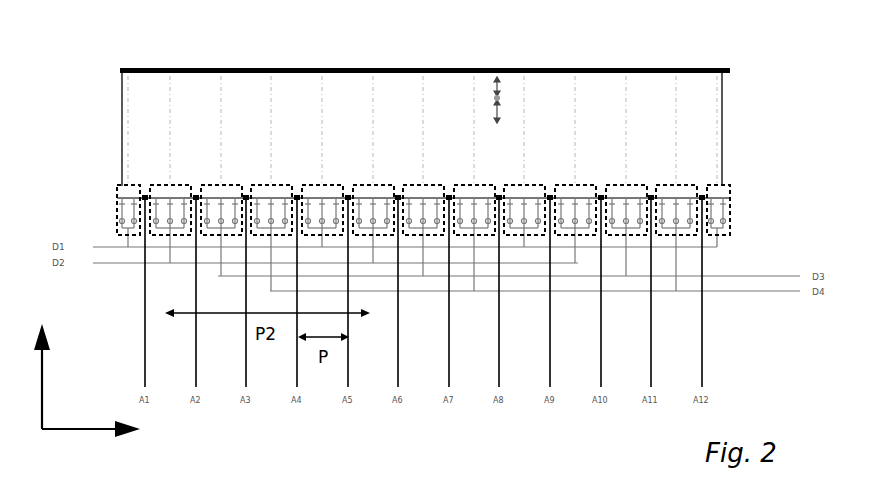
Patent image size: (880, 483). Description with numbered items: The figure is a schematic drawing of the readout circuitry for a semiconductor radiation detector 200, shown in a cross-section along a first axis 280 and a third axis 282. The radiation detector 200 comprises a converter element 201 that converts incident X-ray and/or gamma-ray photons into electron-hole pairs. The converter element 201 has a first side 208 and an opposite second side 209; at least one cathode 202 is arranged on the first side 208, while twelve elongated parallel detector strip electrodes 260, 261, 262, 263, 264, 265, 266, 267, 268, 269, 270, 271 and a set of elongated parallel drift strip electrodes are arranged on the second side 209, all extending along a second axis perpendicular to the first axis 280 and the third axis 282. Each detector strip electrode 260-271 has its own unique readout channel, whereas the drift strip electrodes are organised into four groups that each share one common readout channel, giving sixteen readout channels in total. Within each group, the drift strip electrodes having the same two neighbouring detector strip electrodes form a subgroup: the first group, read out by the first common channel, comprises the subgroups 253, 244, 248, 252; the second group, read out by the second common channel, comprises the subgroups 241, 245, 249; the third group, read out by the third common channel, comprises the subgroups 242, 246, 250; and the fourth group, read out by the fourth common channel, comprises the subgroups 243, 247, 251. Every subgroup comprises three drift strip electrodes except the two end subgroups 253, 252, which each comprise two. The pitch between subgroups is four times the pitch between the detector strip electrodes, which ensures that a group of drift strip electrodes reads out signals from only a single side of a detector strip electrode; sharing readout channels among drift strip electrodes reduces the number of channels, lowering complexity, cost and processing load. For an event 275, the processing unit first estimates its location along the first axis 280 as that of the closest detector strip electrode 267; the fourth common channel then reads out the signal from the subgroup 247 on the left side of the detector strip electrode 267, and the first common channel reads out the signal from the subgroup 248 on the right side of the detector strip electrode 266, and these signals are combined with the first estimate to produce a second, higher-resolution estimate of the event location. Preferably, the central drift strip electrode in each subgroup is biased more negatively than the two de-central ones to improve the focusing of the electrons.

The semiconductor radiation detector 200 is at (836, 29).
The converter element 201 is at (122, 100).
The cathode 202 is at (362, 69).
The first side 208 is at (691, 55).
The second side 209 is at (186, 295).
The subgroup of drift strip electrodes 241 is at (160, 185).
The subgroup of drift strip electrodes 242 is at (208, 185).
The subgroup of drift strip electrodes 243 is at (292, 192).
The subgroup of drift strip electrodes 244 is at (312, 186).
The subgroup of drift strip electrodes 245 is at (390, 190).
The subgroup of drift strip electrodes 246 is at (448, 160).
The subgroup of drift strip electrodes 247 is at (463, 187).
The subgroup of drift strip electrodes 248 is at (546, 186).
The subgroup of drift strip electrodes 249 is at (562, 187).
The subgroup of drift strip electrodes 250 is at (617, 188).
The subgroup of drift strip electrodes 251 is at (697, 186).
The end subgroup of drift strip electrodes 252 is at (722, 159).
The end subgroup of drift strip electrodes 253 is at (117, 186).
The detector strip electrode 260 is at (145, 197).
The detector strip electrode 261 is at (196, 197).
The detector strip electrode 262 is at (246, 197).
The detector strip electrode 263 is at (297, 197).
The detector strip electrode 264 is at (348, 197).
The detector strip electrode 265 is at (398, 197).
The detector strip electrode 266 is at (449, 197).
The detector strip electrode 267 is at (499, 197).
The detector strip electrode 268 is at (550, 197).
The detector strip electrode 269 is at (601, 197).
The detector strip electrode 270 is at (651, 197).
The detector strip electrode 271 is at (702, 197).
The event 275 is at (503, 103).
The first axis 280 is at (82, 429).
The third axis 282 is at (45, 366).